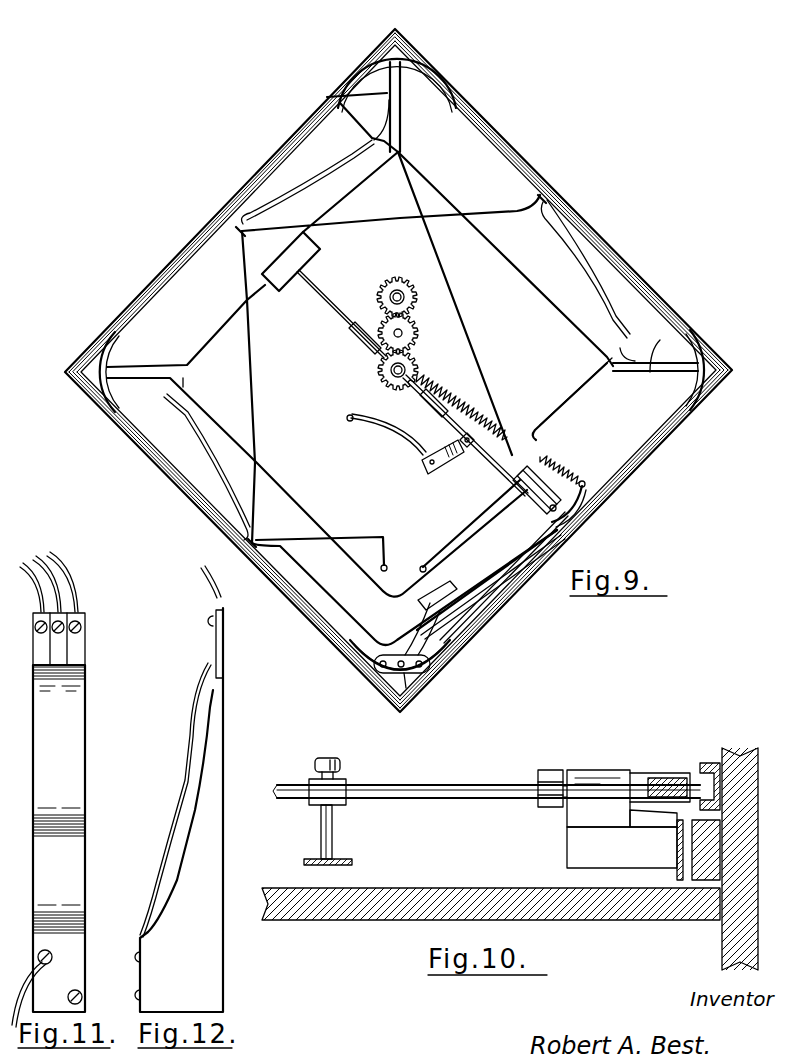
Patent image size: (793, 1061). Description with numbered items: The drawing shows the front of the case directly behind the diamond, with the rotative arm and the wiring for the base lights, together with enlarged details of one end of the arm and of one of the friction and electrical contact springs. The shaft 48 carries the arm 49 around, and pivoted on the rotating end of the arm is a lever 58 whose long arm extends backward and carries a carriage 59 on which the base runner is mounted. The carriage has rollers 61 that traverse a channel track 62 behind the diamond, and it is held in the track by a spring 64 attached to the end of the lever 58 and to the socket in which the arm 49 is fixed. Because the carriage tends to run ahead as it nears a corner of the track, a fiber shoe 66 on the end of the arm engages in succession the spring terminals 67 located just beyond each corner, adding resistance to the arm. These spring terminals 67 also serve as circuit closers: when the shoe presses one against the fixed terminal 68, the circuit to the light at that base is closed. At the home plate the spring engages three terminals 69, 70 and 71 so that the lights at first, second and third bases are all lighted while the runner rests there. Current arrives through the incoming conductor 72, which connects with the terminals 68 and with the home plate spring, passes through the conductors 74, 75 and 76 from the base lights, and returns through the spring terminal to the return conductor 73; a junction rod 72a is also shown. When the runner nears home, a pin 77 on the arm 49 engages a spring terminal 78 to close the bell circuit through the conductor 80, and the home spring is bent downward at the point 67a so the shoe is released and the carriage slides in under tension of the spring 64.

In FIG. 9, the shaft 48 is at (392, 373).
In FIG. 9, the arm 49 is at (452, 426).
In FIG. 10, the arm 49 is at (462, 799).
In FIG. 9, the lever 58 is at (512, 576).
In FIG. 10, the lever 58 is at (660, 776).
In FIG. 9, the carriage 59 is at (410, 690).
In FIG. 9, the rollers 61 is at (372, 664).
In FIG. 9, the channel track 62 is at (622, 272).
In FIG. 10, the channel track 62 is at (708, 762).
In FIG. 9, the spring 64 is at (480, 402).
In FIG. 9, the fiber shoe 66 is at (530, 512).
In FIG. 10, the fiber shoe 66 is at (567, 848).
In FIG. 9, the spring terminals 67 is at (295, 150).
In FIG. 10, the spring terminals 67 is at (681, 882).
In FIG. 11, the spring terminals 67 is at (85, 855).
In FIG. 12, the spring terminals 67 is at (188, 732).
In FIG. 11, the bent point of spring terminal 67a is at (85, 762).
In FIG. 12, the bent point of spring terminal 67a is at (178, 810).
In FIG. 9, the fixed terminal 68 is at (234, 224).
In FIG. 11, the terminal 69 is at (44, 640).
In FIG. 11, the terminal 70 is at (60, 645).
In FIG. 9, the terminal 71 is at (580, 516).
In FIG. 11, the terminal 71 is at (78, 654).
In FIG. 12, the terminal 71 is at (216, 650).
In FIG. 9, the incoming conductor 72 is at (228, 335).
In FIG. 9, the junction rod 72a is at (404, 128).
In FIG. 9, the return conductor 73 is at (438, 220).
In FIG. 11, the return conductor 73 is at (33, 985).
In FIG. 9, the conductor 74 is at (660, 340).
In FIG. 11, the conductor 74 is at (35, 567).
In FIG. 9, the conductor 75 is at (327, 97).
In FIG. 11, the conductor 75 is at (52, 572).
In FIG. 9, the conductor 76 is at (285, 498).
In FIG. 11, the conductor 76 is at (74, 590).
In FIG. 9, the pin 77 is at (467, 448).
In FIG. 10, the pin 77 is at (333, 831).
In FIG. 9, the spring terminal 78 is at (440, 470).
In FIG. 10, the spring terminal 78 is at (354, 863).
In FIG. 9, the conductor 80 is at (384, 430).